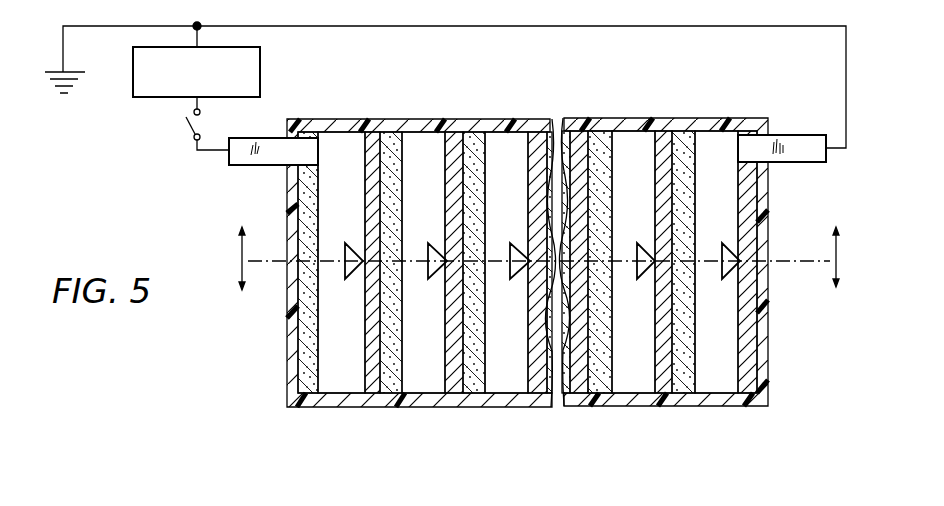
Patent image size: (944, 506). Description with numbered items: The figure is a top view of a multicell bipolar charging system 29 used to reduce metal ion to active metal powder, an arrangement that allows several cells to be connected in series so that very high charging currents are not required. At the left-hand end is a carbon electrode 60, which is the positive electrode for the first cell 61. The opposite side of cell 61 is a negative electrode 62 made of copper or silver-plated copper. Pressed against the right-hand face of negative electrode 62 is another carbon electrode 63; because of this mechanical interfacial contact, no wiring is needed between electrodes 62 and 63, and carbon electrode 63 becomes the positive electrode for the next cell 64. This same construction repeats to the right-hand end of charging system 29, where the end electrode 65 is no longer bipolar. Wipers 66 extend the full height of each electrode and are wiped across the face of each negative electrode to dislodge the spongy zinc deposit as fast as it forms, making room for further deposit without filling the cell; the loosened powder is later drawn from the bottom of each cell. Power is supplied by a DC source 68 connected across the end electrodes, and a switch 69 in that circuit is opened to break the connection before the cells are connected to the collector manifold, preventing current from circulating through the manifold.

The charging system 29 is at (695, 415).
The carbon electrode 60 is at (312, 388).
The cell 61 is at (347, 380).
The negative electrode 62 is at (370, 137).
The carbon electrode 63 is at (393, 137).
The cell 64 is at (427, 375).
The end electrode 65 is at (748, 373).
The wipers 66 is at (353, 243).
The DC source 68 is at (258, 58).
The switch 69 is at (188, 124).